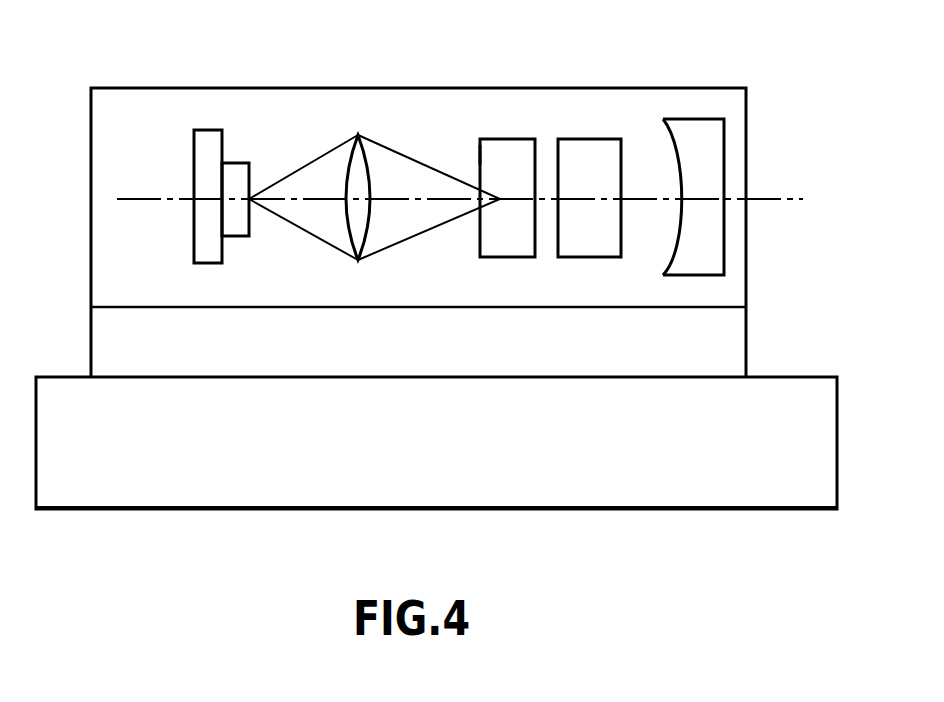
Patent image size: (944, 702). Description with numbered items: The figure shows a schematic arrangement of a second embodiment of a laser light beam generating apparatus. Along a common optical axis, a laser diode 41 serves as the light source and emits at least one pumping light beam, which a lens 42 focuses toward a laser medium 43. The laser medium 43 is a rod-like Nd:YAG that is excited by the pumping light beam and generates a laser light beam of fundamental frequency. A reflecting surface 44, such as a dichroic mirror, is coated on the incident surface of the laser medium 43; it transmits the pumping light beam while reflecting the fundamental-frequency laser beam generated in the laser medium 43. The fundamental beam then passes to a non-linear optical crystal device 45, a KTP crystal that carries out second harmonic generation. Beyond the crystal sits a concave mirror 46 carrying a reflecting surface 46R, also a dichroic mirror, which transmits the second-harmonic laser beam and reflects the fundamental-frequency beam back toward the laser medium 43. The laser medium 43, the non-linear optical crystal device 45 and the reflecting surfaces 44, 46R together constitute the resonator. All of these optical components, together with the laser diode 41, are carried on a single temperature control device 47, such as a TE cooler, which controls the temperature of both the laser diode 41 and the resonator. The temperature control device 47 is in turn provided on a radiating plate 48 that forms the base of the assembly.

The laser diode 41 is at (237, 172).
The lens 42 is at (353, 157).
The laser medium 43 is at (513, 153).
The reflecting surface 44 is at (480, 152).
The non-linear optical crystal device 45 is at (592, 152).
The concave mirror 46 is at (676, 150).
The reflecting surface 46R is at (672, 145).
The temperature control device 47 is at (730, 350).
The radiating plate 48 is at (638, 497).